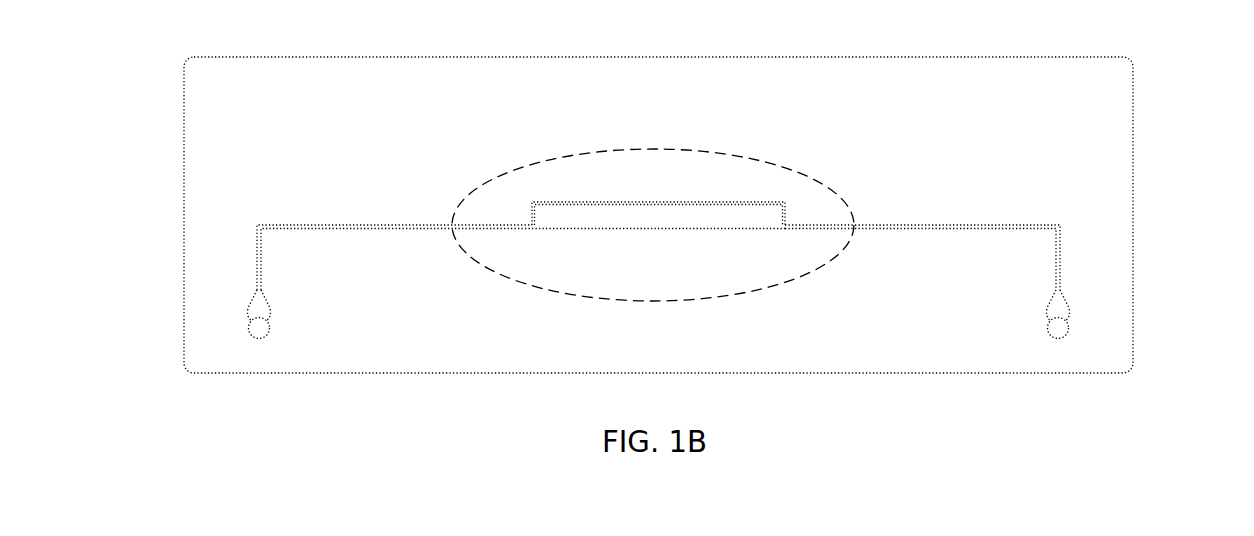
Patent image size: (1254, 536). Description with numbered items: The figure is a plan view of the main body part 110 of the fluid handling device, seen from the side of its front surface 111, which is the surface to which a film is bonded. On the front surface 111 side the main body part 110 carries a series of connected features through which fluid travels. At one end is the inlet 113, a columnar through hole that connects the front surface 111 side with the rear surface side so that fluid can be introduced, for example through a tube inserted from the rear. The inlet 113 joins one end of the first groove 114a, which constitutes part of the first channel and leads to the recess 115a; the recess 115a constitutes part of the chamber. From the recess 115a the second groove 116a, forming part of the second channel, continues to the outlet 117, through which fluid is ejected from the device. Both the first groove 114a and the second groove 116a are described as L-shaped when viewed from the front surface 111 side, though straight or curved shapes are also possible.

The main body part 110 is at (1122, 167).
The front surface 111 is at (177, 177).
The inlet 113 is at (258, 339).
The first groove 114a is at (313, 229).
The recess 115a is at (567, 215).
The second groove 116a is at (948, 229).
The outlet 117 is at (1062, 339).